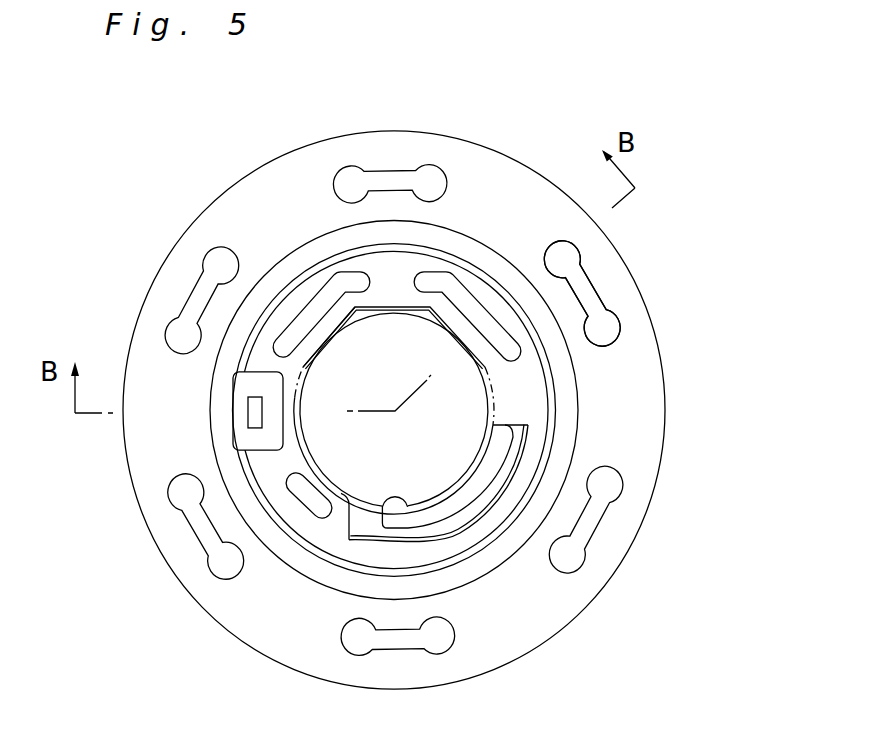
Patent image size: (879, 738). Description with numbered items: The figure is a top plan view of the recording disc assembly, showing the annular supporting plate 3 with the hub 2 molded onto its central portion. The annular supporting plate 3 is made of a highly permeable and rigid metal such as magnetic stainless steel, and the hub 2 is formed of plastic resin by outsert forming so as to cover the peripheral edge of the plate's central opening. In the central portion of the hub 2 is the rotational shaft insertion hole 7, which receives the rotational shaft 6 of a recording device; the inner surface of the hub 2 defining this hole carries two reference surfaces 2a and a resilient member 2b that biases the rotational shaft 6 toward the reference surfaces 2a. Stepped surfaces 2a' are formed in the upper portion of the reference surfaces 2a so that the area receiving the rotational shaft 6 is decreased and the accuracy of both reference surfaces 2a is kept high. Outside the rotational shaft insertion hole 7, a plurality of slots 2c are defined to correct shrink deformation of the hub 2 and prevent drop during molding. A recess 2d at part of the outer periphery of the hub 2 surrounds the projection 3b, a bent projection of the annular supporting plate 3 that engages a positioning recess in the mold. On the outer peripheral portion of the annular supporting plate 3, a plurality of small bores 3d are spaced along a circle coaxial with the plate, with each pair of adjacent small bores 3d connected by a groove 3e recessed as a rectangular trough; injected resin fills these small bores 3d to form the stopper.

The hub 2 is at (343, 261).
The reference surfaces 2a is at (278, 307).
The stepped surfaces 2a' is at (236, 259).
The resilient member 2b is at (445, 507).
The slots 2c is at (445, 281).
The recess 2d is at (250, 440).
The annular supporting plate 3 is at (572, 583).
The projection 3b is at (247, 412).
The small bores 3d is at (575, 248).
The groove 3e is at (597, 289).
The rotational shaft 6 is at (350, 518).
The rotational shaft insertion hole 7 is at (487, 378).